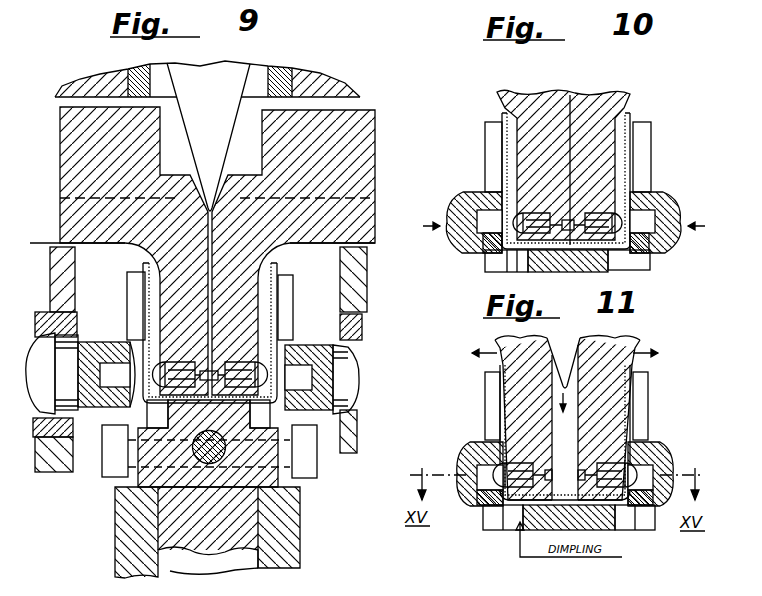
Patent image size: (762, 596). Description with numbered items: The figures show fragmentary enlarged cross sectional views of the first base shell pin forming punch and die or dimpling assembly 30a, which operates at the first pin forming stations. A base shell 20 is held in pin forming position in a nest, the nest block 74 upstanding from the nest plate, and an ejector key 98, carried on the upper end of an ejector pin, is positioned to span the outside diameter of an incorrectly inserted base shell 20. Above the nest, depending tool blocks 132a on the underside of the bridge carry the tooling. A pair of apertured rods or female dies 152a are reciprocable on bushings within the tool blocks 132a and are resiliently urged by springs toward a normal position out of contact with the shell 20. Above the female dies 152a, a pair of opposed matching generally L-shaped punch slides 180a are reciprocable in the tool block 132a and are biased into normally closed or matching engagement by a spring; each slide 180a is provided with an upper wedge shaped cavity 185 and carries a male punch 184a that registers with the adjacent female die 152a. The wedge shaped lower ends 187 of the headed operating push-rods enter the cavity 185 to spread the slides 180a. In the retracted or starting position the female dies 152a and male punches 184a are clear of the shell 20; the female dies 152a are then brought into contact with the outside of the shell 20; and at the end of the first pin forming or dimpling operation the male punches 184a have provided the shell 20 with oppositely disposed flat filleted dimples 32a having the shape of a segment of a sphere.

In FIG. 9, the base shell 20 is at (277, 298).
In FIG. 10, the base shell 20 is at (635, 150).
In FIG. 11, the base shell 20 is at (630, 400).
In FIG. 9, the first base shell pin forming punch and die or dimpling assembly 30a is at (322, 478).
In FIG. 11, the flat filleted dimples 32a is at (460, 455).
In FIG. 9, the nest block 74 is at (118, 545).
In FIG. 9, the ejector key 98 is at (268, 452).
In FIG. 10, the ejector key 98 is at (602, 273).
In FIG. 9, the tool blocks 132a is at (362, 268).
In FIG. 9, the female die 152a is at (355, 372).
In FIG. 10, the female die 152a is at (673, 212).
In FIG. 11, the female die 152a is at (462, 506).
In FIG. 9, the punch slide 180a is at (72, 128).
In FIG. 10, the punch slide 180a is at (548, 97).
In FIG. 11, the punch slide 180a is at (520, 352).
In FIG. 9, the male punch 184a is at (175, 375).
In FIG. 10, the male punch 184a is at (533, 222).
In FIG. 11, the male punch 184a is at (500, 515).
In FIG. 9, the upper wedge shaped cavity 185 is at (228, 178).
In FIG. 11, the upper wedge shaped cavity 185 is at (563, 362).
In FIG. 9, the wedge shaped lower ends 187 is at (230, 80).
In FIG. 11, the wedge shaped lower ends 187 is at (630, 366).